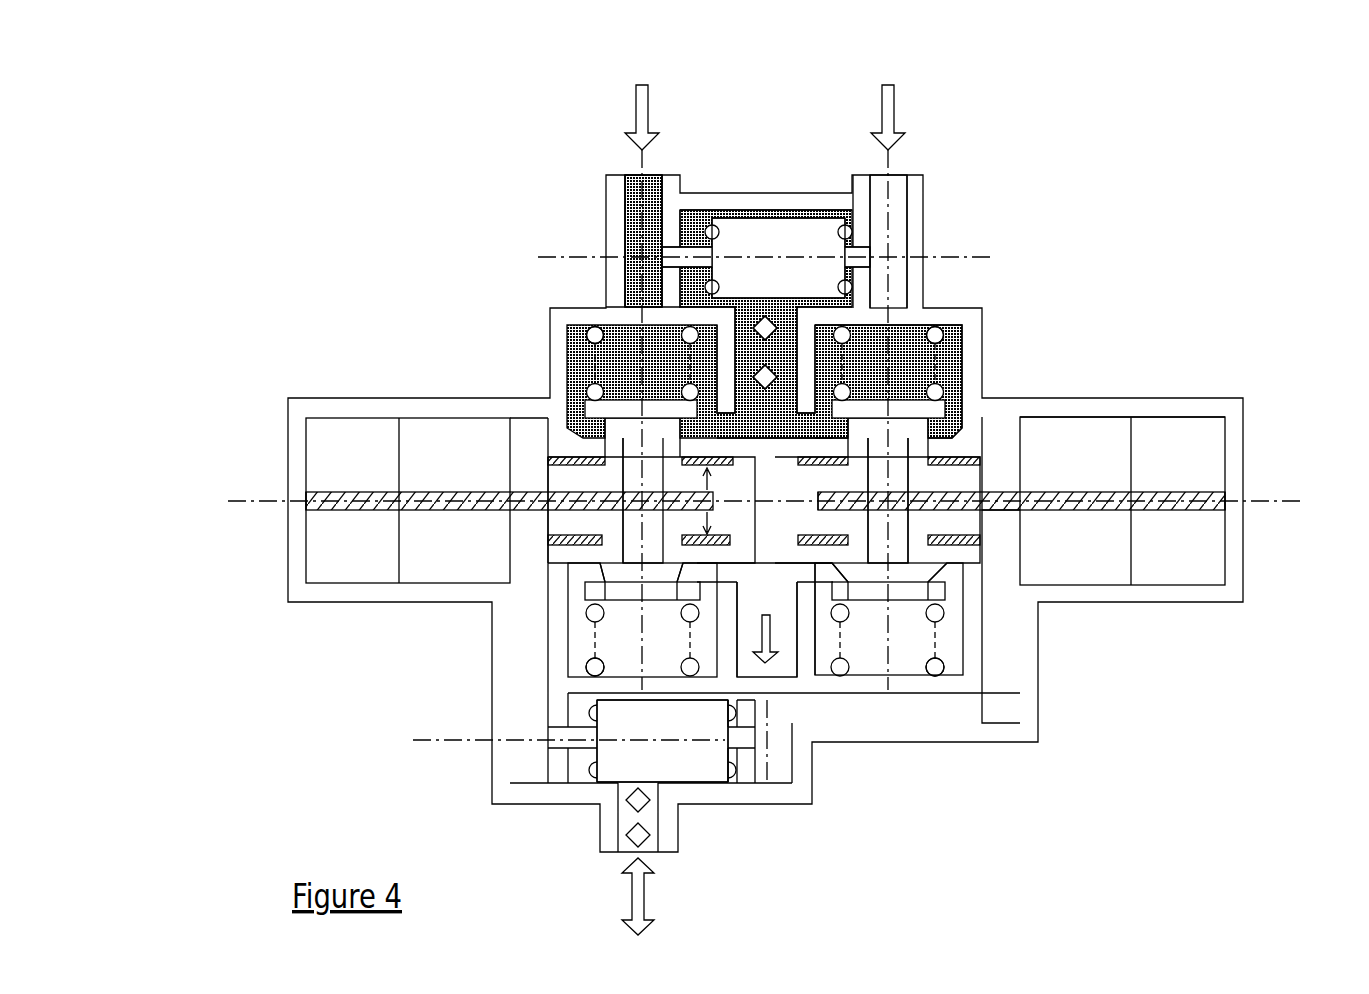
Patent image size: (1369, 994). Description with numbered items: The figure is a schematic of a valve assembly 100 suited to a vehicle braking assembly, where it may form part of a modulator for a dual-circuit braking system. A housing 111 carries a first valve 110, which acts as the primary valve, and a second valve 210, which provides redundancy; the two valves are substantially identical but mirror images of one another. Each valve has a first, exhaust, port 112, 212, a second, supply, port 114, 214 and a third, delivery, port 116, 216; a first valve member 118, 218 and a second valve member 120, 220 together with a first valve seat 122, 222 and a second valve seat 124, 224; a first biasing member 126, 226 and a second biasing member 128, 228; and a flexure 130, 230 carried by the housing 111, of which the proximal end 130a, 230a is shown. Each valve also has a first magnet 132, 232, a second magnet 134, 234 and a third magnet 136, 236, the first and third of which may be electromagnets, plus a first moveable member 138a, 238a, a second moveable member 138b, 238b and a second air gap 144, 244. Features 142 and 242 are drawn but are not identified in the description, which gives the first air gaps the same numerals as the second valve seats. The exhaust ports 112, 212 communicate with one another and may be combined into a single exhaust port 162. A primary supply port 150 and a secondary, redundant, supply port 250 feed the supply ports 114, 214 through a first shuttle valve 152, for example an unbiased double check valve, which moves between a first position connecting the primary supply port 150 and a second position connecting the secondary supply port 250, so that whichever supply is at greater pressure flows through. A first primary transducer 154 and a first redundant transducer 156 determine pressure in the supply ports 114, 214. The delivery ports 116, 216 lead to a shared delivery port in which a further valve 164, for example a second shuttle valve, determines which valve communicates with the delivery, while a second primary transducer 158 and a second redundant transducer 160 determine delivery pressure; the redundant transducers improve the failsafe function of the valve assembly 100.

The valve assembly 100 is at (325, 160).
The first valve 110 is at (513, 397).
The housing 111 is at (298, 572).
The first port 112 is at (667, 742).
The second port 114 is at (720, 413).
The third port 116 is at (558, 520).
The first valve member 118 is at (590, 587).
The second valve member 120 is at (575, 433).
The first valve seat 122 is at (598, 562).
The second valve seat 124 is at (550, 460).
The first biasing member 126 is at (586, 668).
The second biasing member 128 is at (593, 330).
The flexure 130 is at (318, 492).
The proximal end 130a is at (317, 492).
The first magnet 132 is at (407, 495).
The second magnet 134 is at (552, 540).
The third magnet 136 is at (547, 490).
The first moveable member 138a is at (590, 700).
The second moveable member 138b is at (637, 458).
The center pilot piston 142 is at (780, 667).
The second air gap 144 is at (477, 495).
The primary supply port 150 is at (625, 212).
The first shuttle valve 152 is at (740, 332).
The first primary transducer 154 is at (770, 242).
The first redundant transducer 156 is at (760, 318).
The second primary transducer 158 is at (625, 800).
The second redundant transducer 160 is at (635, 840).
The single exhaust port 162 is at (800, 580).
The further valve 164 is at (710, 690).
The second valve 210 is at (993, 396).
The first port 212 is at (820, 577).
The second port 214 is at (815, 412).
The third port 216 is at (983, 493).
The first valve member 218 is at (963, 673).
The second valve member 220 is at (955, 340).
The first valve seat 222 is at (990, 550).
The second valve seat 224 is at (935, 435).
The first biasing member 226 is at (950, 680).
The second biasing member 228 is at (938, 333).
The flexure 230 is at (983, 480).
The proximal end 230a is at (1225, 498).
The first magnet 232 is at (873, 502).
The second magnet 234 is at (985, 518).
The third magnet 236 is at (983, 467).
The first moveable member 238a is at (982, 535).
The second moveable member 238b is at (890, 440).
The second inner seal 242 is at (857, 563).
The second air gap 244 is at (885, 410).
The secondary supply port 250 is at (898, 200).